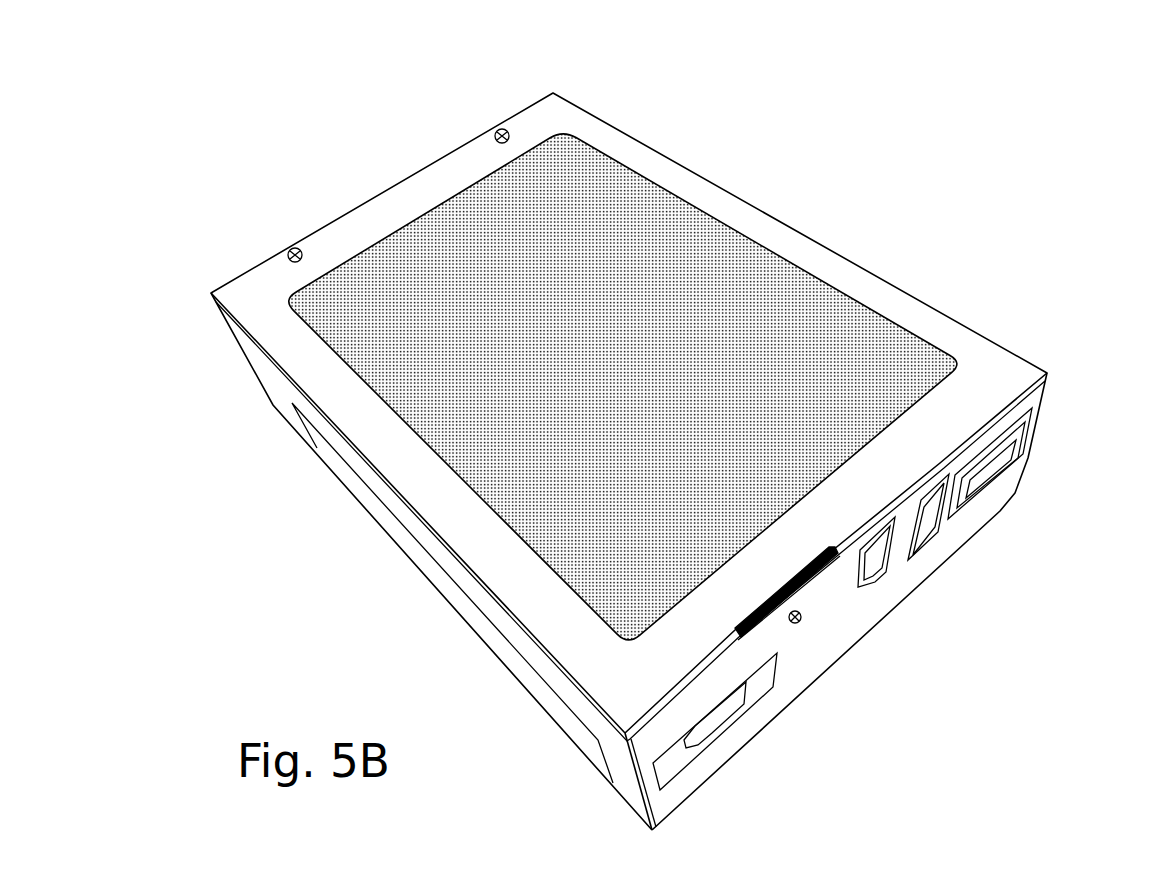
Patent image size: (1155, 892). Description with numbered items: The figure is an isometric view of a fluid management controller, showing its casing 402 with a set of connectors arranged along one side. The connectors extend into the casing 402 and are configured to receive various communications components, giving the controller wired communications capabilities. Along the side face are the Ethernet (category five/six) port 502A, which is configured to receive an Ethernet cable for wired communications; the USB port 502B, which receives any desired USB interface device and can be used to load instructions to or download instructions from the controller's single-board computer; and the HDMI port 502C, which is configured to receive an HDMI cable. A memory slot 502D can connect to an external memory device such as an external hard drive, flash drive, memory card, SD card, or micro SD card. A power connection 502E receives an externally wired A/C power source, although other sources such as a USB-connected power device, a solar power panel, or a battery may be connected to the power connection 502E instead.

The casing 402 is at (983, 357).
The CAT 5/6 port 502A is at (1000, 452).
The universal system bus (USB) port 502B is at (920, 536).
The high-definition multimedia interface (HDMI) port 502C is at (868, 580).
The memory slot 502D is at (807, 585).
The power connection 502E is at (708, 727).